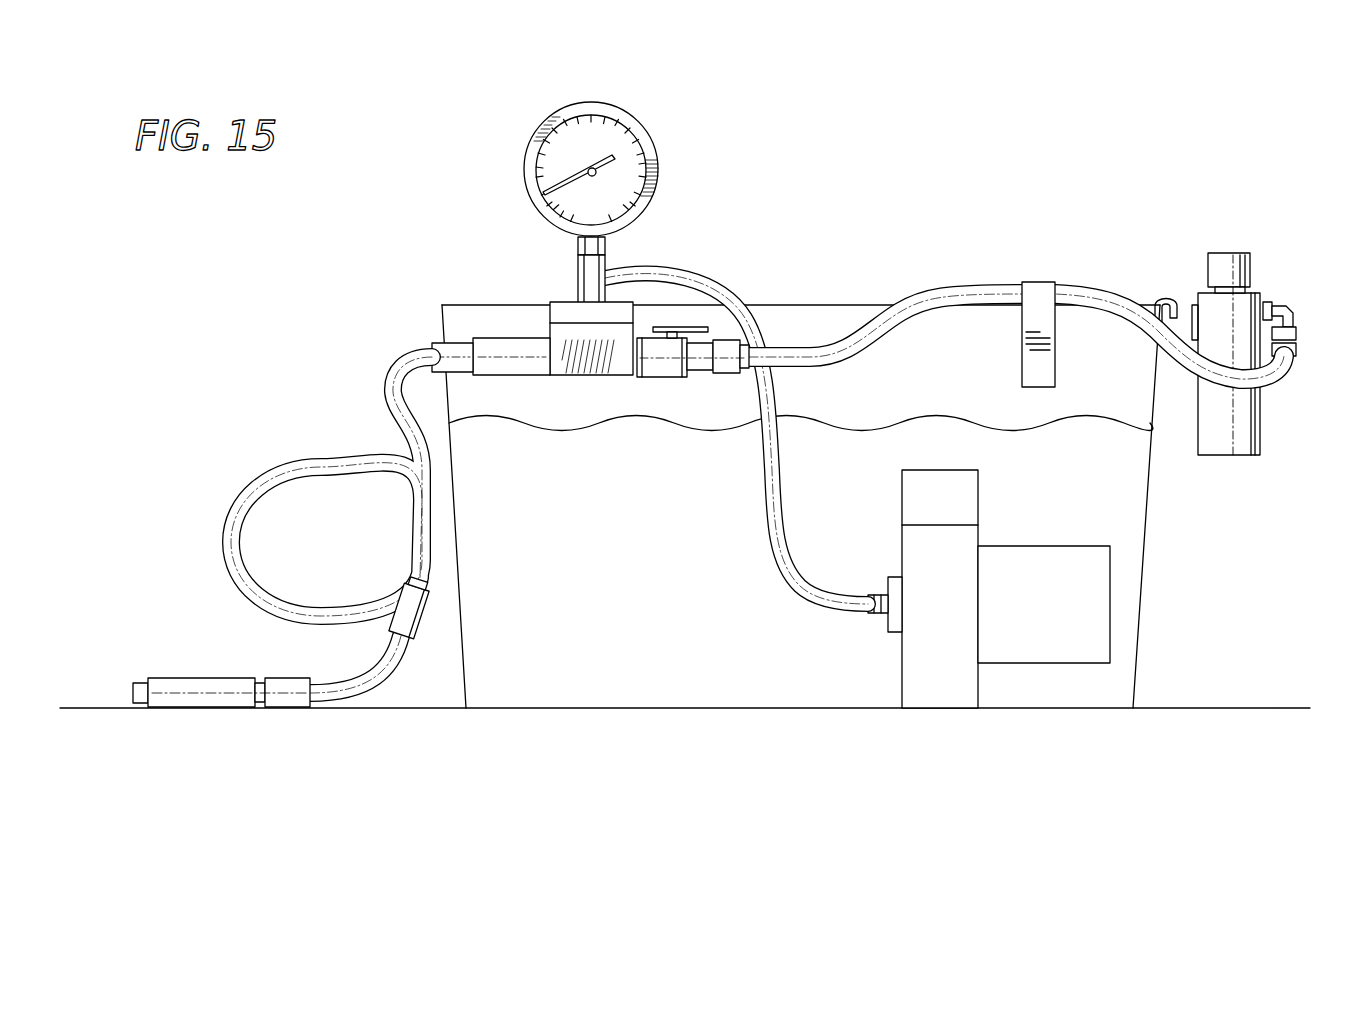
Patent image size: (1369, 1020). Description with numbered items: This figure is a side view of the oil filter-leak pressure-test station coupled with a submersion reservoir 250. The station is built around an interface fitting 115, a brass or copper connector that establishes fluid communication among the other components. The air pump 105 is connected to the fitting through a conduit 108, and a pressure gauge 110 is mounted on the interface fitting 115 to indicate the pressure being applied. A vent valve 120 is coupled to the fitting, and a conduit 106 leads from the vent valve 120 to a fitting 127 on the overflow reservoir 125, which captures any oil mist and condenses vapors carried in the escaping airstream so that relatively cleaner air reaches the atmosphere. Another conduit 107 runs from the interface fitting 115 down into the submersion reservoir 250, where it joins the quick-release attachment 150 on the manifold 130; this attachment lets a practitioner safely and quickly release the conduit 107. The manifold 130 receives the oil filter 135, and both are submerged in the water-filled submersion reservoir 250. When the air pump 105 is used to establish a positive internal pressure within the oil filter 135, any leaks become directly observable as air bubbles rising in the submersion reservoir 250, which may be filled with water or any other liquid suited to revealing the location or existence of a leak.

The air pump 105 is at (178, 676).
The conduit 106 is at (988, 284).
The conduit 107 is at (651, 266).
The conduit 108 is at (270, 465).
The pressure gauge 110 is at (537, 133).
The interface fitting 115 is at (560, 339).
The vent valve 120 is at (677, 343).
The overflow reservoir 125 is at (1245, 308).
The fitting 127 is at (1296, 313).
The manifold 130 is at (928, 693).
The oil filter 135 is at (1097, 546).
The quick-release attachment 150 is at (880, 615).
The submersion reservoir 250 is at (1140, 622).